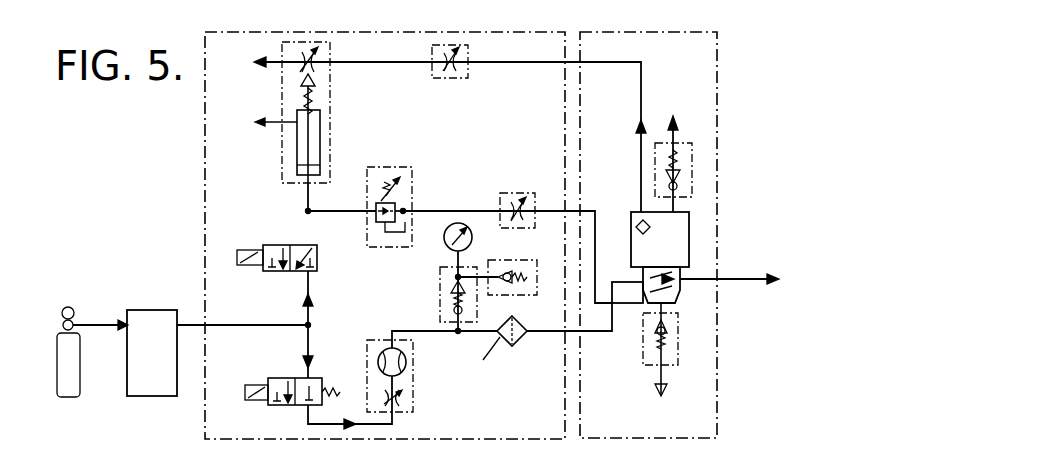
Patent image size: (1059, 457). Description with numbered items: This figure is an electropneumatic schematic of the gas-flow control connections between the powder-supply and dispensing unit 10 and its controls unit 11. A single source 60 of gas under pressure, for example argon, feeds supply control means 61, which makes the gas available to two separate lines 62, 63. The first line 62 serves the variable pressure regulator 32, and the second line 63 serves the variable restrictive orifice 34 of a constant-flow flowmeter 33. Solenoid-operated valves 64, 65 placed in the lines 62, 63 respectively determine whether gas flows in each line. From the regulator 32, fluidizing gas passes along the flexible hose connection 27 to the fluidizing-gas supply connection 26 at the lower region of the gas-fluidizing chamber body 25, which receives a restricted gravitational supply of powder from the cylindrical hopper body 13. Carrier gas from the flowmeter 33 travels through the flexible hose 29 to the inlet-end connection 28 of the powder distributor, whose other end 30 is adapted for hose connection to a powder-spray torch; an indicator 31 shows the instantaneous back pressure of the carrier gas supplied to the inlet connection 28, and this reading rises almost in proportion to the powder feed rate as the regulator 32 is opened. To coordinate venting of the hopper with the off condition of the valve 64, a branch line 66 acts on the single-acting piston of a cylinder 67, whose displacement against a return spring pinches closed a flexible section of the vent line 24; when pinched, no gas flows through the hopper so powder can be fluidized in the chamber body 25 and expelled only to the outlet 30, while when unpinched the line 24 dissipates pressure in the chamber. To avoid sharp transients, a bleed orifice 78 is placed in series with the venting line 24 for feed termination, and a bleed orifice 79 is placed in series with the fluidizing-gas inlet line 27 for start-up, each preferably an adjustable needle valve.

The powder-supply and dispensing unit 10 is at (664, 30).
The controls unit 11 is at (434, 30).
The cylindrical hopper body 13 is at (689, 237).
The flexible-hose vent connection 24 is at (574, 62).
The gas-fluidizing chamber body 25 is at (680, 284).
The fluidizing-gas supply connection 26 is at (643, 315).
The flexible hose connection 27 is at (578, 210).
The inlet-end connection 28 is at (646, 278).
The flexible hose 29 is at (574, 334).
The other end of powder distributor 30 is at (692, 278).
The indicator 31 is at (446, 238).
The pressure-regulator valve 32 is at (375, 249).
The flowmeter 33 is at (410, 345).
The variable restrictive orifice 34 is at (405, 398).
The source of gas under pressure 60 is at (60, 348).
The supply control means 61 is at (133, 352).
The line 62 is at (336, 210).
The line 63 is at (320, 426).
The solenoid-operated valve 64 is at (290, 238).
The solenoid-operated valve 65 is at (292, 372).
The branch line 66 is at (306, 195).
The cylinder 67 is at (322, 137).
The bleed orifice 78 is at (460, 78).
The bleed orifice 79 is at (505, 194).